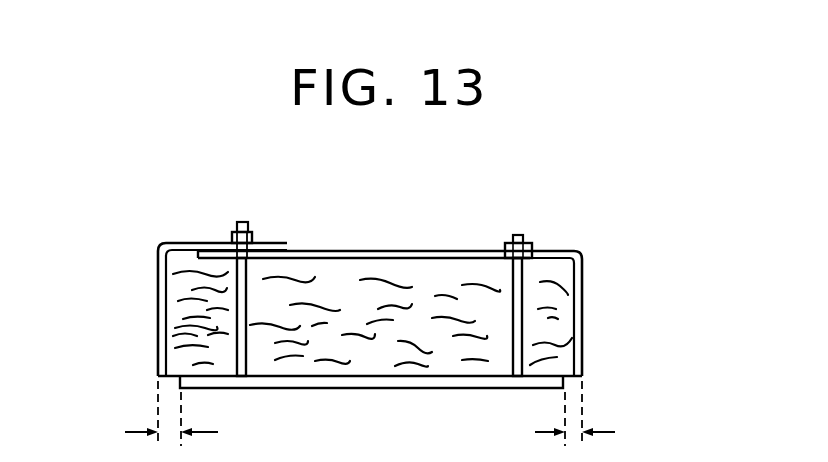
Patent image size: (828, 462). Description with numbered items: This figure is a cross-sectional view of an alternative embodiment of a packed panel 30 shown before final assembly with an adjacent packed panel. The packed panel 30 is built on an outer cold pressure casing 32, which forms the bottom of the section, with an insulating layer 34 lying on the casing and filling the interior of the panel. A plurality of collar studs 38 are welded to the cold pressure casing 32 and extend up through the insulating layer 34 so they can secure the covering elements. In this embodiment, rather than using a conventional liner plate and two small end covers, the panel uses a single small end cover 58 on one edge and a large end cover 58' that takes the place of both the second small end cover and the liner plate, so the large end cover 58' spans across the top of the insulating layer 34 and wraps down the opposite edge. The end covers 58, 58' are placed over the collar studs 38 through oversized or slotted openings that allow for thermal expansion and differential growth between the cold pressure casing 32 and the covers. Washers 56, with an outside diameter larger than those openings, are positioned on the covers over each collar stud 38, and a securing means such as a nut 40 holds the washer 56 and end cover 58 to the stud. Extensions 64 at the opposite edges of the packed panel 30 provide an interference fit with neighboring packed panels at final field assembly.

The packed panel 30 is at (472, 201).
The cold pressure casing 32 is at (540, 385).
The insulating layer 34 is at (572, 350).
The collar studs 38 is at (520, 236).
The nut 40 is at (233, 232).
The washers 56 is at (255, 243).
The end cover 58 is at (336, 301).
The large end cover 58' is at (582, 296).
The extensions 64 is at (370, 416).